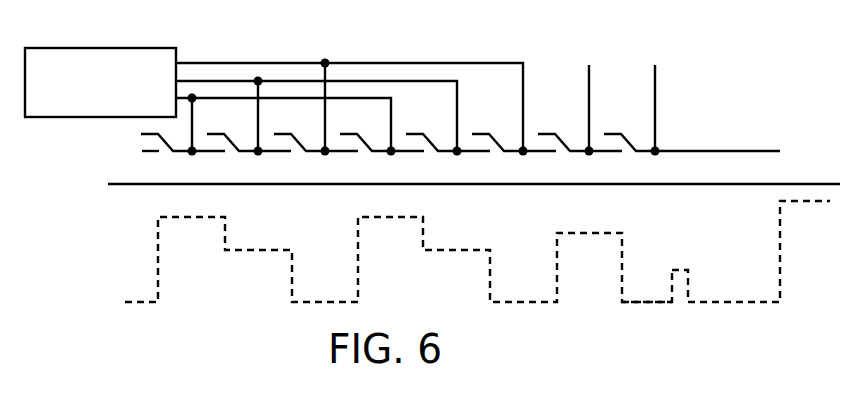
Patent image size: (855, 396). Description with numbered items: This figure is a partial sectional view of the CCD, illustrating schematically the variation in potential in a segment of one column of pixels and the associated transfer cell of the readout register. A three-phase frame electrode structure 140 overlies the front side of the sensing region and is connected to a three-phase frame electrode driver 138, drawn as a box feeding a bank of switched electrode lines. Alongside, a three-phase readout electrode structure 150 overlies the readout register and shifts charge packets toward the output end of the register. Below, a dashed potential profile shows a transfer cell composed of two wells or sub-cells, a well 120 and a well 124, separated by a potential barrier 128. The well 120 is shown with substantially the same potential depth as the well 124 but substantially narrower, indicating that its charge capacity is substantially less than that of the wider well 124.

The three-phase frame electrode driver 138 is at (143, 47).
The three-phase frame electrode structure 140 is at (512, 42).
The three-phase readout electrode structure 150 is at (704, 143).
The well 120 is at (657, 270).
The potential barrier 128 is at (688, 270).
The well 124 is at (723, 285).